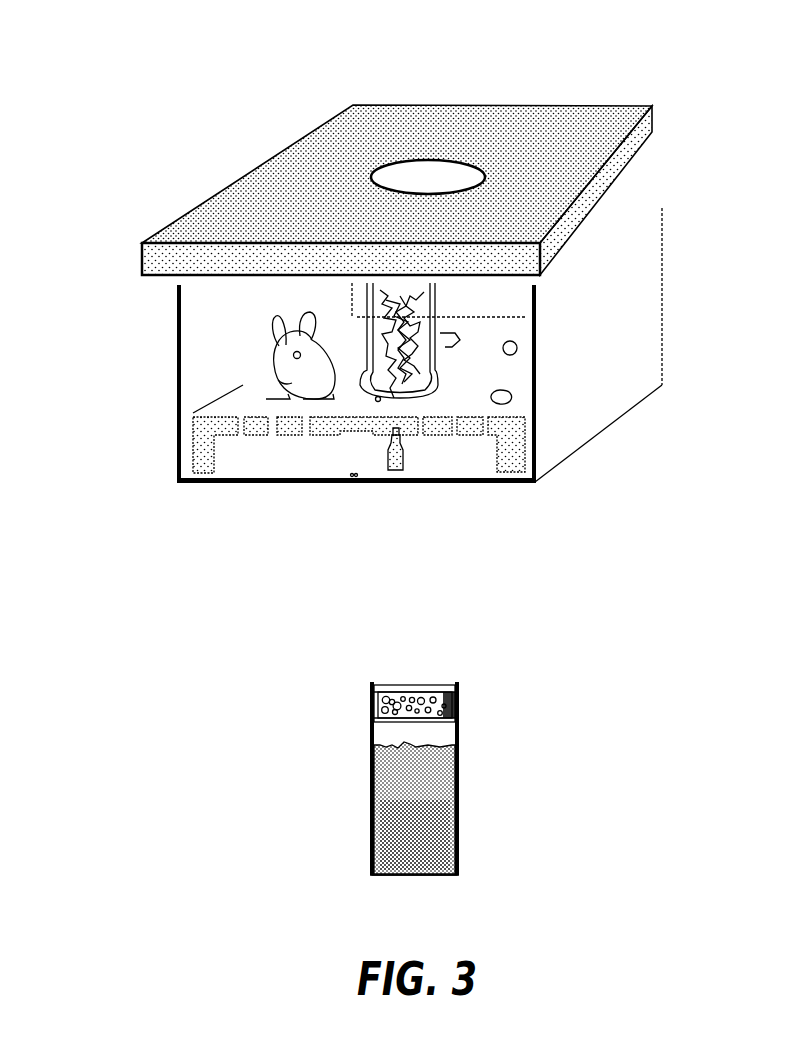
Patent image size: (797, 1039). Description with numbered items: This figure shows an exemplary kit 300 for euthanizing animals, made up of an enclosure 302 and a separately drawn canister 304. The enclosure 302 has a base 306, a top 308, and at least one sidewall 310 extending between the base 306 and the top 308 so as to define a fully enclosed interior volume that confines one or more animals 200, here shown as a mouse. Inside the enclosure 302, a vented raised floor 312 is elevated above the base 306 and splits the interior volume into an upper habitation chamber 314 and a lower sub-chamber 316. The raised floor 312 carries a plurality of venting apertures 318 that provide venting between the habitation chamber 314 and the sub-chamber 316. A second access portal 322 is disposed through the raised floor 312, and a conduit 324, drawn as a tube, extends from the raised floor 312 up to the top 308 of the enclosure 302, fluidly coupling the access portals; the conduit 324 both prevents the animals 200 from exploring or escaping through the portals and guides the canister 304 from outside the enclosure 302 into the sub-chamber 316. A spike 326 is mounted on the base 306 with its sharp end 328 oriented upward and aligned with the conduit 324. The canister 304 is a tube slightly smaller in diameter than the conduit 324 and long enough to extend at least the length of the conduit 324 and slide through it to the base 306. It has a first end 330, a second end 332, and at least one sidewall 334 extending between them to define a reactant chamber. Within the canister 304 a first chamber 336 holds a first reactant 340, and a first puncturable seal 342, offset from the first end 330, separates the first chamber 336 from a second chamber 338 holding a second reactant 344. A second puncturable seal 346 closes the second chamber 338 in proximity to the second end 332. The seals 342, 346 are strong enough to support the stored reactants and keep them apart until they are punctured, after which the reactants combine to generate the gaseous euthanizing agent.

The kit 300 is at (88, 88).
The enclosure 302 is at (695, 174).
The canister 304 is at (494, 754).
The base 306 is at (270, 483).
The top 308 is at (290, 200).
The sidewall 310 is at (428, 160).
The vented raised floor 312 is at (223, 423).
The habitation chamber 314 is at (210, 321).
The sub-chamber 316 is at (301, 455).
The venting apertures 318 is at (511, 357).
The second access portal 322 is at (410, 400).
The conduit 324 is at (337, 330).
The spike 326 is at (393, 472).
The sharp end 328 is at (397, 433).
The animals 200 is at (272, 366).
The first end 330 is at (388, 876).
The second end 332 is at (372, 686).
The sidewall 334 is at (370, 768).
The first chamber 336 is at (433, 798).
The second chamber 338 is at (458, 690).
The first reactant 340 is at (408, 842).
The first puncturable seal 342 is at (393, 720).
The second reactant 344 is at (398, 705).
The second puncturable seal 346 is at (415, 685).